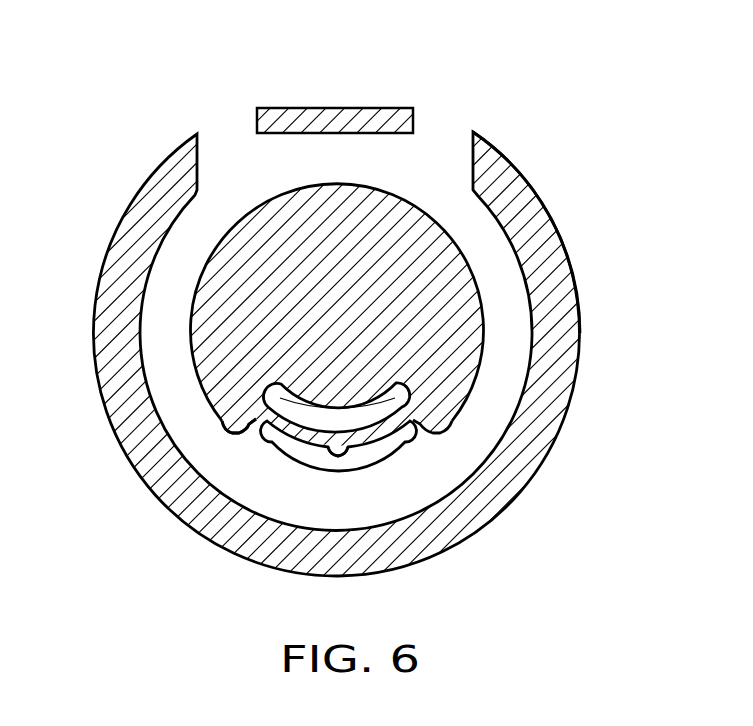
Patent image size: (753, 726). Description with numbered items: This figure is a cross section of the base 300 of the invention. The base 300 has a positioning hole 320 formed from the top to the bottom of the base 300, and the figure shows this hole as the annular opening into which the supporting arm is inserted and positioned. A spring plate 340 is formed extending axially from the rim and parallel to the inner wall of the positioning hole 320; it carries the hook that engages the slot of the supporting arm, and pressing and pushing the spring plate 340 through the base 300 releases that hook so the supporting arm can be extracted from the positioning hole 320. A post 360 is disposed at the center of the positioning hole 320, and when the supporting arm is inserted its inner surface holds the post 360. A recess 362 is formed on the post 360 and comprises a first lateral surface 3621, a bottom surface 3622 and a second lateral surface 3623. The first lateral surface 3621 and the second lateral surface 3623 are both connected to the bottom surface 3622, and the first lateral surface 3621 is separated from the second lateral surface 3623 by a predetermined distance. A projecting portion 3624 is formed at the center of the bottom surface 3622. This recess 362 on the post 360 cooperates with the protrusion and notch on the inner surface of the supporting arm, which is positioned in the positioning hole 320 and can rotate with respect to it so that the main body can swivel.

The base 300 is at (581, 320).
The positioning hole 320 is at (175, 389).
The spring plate 340 is at (357, 108).
The post 360 is at (384, 182).
The recess 362 is at (436, 498).
The first lateral surface 3621 is at (428, 436).
The bottom surface 3622 is at (343, 432).
The projecting portion 3624 is at (257, 447).
The second lateral surface 3623 is at (344, 457).